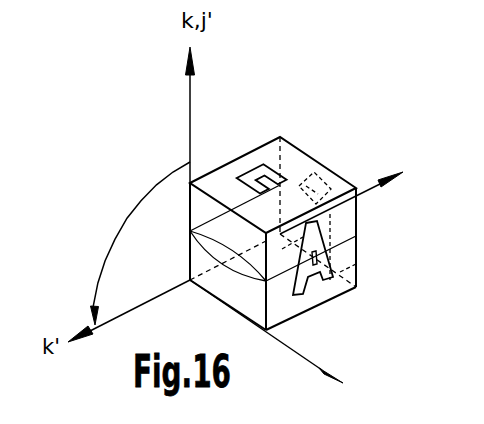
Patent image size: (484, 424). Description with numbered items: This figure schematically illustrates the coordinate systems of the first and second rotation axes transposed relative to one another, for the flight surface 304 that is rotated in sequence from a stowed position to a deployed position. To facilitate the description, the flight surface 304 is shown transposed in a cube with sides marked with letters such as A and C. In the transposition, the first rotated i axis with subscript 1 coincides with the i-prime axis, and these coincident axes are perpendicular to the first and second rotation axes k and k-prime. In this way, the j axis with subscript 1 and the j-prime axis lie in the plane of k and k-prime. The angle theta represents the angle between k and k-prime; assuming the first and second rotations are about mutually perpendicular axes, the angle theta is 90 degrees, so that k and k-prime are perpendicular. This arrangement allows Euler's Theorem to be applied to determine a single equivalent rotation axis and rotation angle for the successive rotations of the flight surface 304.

The flight surface 304 is at (220, 230).
The rotation angle theta of 90 degrees 90 is at (131, 241).
The rotated coordinate axes i1, j1 1 is at (310, 278).